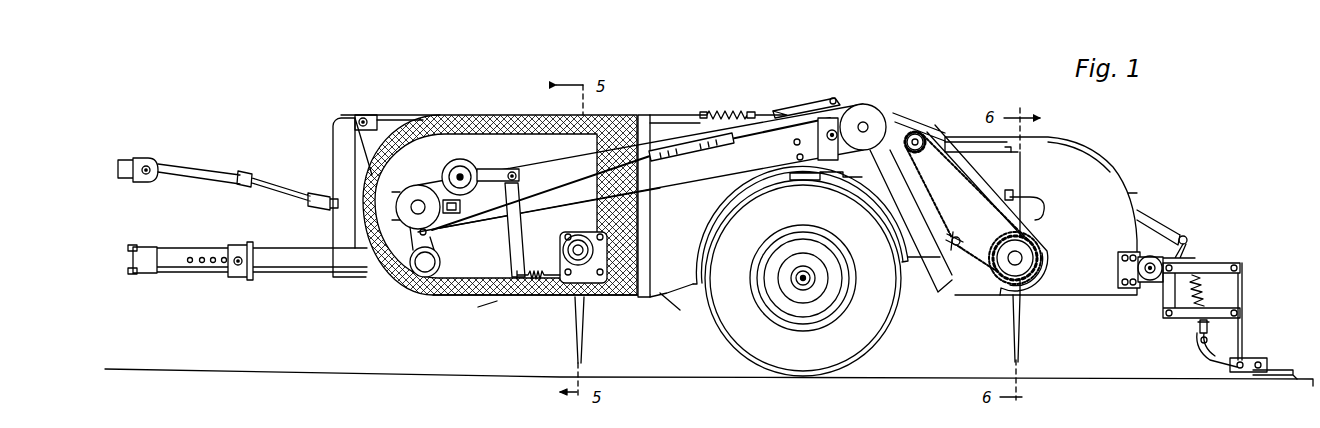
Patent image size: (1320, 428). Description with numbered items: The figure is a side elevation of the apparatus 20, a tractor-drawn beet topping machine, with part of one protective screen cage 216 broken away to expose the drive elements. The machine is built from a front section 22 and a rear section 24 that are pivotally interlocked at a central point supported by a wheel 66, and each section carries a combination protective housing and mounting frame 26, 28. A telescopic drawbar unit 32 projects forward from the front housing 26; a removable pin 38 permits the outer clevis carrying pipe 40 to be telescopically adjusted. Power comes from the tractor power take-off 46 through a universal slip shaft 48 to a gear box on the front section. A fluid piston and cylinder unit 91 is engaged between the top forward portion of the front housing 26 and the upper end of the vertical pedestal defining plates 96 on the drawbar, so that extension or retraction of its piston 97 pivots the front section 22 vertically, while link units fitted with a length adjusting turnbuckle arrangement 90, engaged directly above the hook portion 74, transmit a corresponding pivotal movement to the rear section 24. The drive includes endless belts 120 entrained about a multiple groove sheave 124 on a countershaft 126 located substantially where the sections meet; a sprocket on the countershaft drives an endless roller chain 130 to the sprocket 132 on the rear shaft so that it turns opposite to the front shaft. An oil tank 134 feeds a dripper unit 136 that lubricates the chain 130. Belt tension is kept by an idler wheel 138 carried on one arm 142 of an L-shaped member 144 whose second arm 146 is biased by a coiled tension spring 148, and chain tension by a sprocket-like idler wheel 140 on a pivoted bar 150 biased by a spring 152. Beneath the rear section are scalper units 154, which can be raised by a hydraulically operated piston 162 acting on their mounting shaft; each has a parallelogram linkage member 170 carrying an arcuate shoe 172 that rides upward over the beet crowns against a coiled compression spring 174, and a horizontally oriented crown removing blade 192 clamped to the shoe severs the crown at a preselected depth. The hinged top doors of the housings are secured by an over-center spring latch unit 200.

The apparatus 20 is at (340, 78).
The front section 22 is at (645, 112).
The rear section 24 is at (1083, 141).
The combination protective housing and mounting frame 26 is at (678, 127).
The rear housing 28 is at (1098, 190).
The telescopic drawbar unit 32 is at (271, 287).
The pin 38 is at (239, 257).
The outer clevis carrying pipe 40 is at (185, 266).
The power take-off 46 is at (128, 159).
The universal slip shaft 48 is at (240, 178).
The wheel 66 is at (730, 340).
The hook portion 74 is at (822, 140).
The turnbuckle arrangement 90 is at (710, 146).
The fluid piston and cylinder unit 91 is at (413, 112).
The vertical pedestal defining plates 96 is at (335, 163).
The piston 97 is at (390, 119).
The belts 120 is at (663, 188).
The second multiple groove sheave 124 is at (863, 104).
The countershaft 126 is at (868, 125).
The endless roller chain 130 is at (980, 258).
The sprocket 132 is at (1004, 264).
The oil tank 134 is at (1005, 175).
The dripper unit 136 is at (1047, 212).
The idler wheel 138 is at (474, 172).
The idler wheel 140 is at (923, 131).
The arm 142 is at (504, 178).
The L-shaped member 144 is at (503, 221).
The second arm 146 is at (518, 245).
The coiled tension spring 148 is at (533, 281).
The bar 150 is at (930, 198).
The spring 152 is at (955, 246).
The scalper units 154 is at (1229, 250).
The piston 162 is at (1153, 224).
The member 170 is at (1240, 295).
The arcuate shoe 172 is at (1205, 362).
The coiled compression spring 174 is at (1193, 277).
The crown removing blade 192 is at (1293, 373).
The over-center spring latch unit 200 is at (749, 103).
The protective screen cages 216 is at (438, 296).